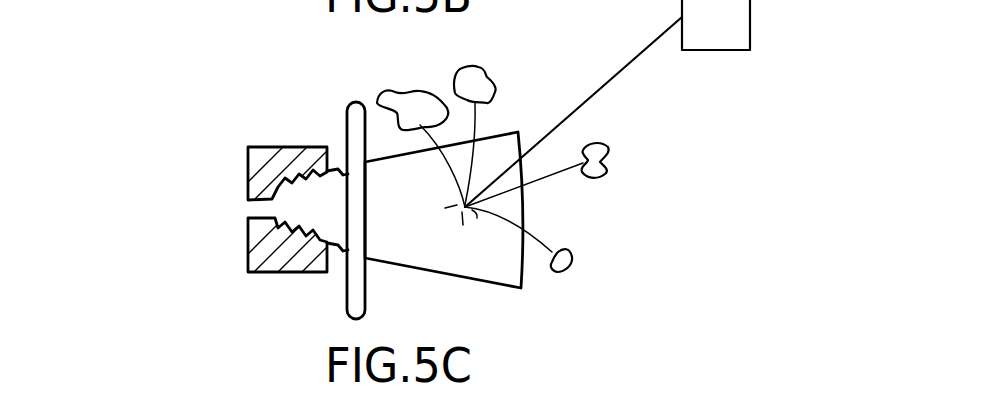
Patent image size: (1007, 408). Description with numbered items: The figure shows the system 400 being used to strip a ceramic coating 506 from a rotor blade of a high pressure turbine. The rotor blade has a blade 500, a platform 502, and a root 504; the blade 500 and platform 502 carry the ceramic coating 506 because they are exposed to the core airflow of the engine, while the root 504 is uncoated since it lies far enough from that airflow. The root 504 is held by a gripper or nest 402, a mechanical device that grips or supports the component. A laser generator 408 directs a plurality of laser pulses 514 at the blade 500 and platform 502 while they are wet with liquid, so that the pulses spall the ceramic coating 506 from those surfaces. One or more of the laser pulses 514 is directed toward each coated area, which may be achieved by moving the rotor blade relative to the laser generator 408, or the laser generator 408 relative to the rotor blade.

The system 400 is at (145, 210).
The gripper or nest 402 is at (248, 173).
The laser generator 408 is at (750, 13).
The blade 500 is at (500, 288).
The platform 502 is at (347, 103).
The root 504 is at (322, 217).
The ceramic coating 506 is at (604, 162).
The laser pulses 514 is at (608, 83).